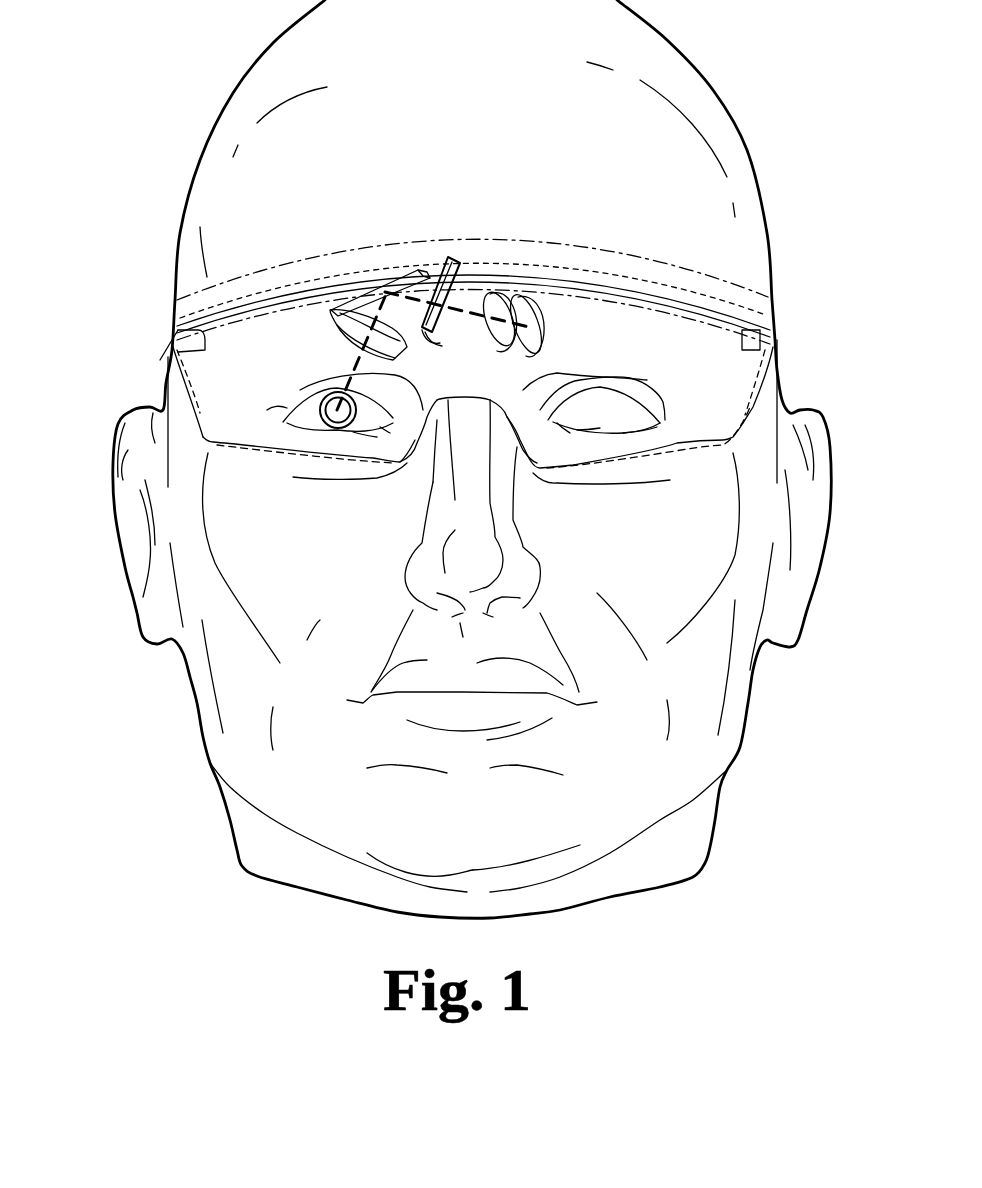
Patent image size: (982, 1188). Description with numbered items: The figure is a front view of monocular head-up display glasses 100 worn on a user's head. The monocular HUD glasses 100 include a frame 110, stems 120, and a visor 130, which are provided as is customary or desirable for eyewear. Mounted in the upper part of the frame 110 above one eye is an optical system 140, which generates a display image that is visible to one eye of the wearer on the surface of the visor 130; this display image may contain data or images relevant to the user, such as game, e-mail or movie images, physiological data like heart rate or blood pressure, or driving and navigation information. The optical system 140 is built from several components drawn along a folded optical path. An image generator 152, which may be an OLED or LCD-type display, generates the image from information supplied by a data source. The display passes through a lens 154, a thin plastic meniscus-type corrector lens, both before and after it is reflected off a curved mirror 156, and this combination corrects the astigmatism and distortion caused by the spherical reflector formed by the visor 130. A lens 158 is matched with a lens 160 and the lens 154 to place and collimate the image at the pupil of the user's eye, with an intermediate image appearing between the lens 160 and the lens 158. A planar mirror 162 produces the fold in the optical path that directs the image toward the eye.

The monocular HUD glasses 100 is at (151, 306).
The frame 110 is at (703, 275).
The stems 120 is at (147, 363).
The visor 130 is at (767, 433).
The optical system 140 is at (553, 333).
The image generator 152 is at (452, 268).
The lens 154 is at (510, 294).
The mirror 156 is at (540, 293).
The lens 158 is at (427, 330).
The lens 160 is at (335, 334).
The planar mirror 162 is at (400, 287).